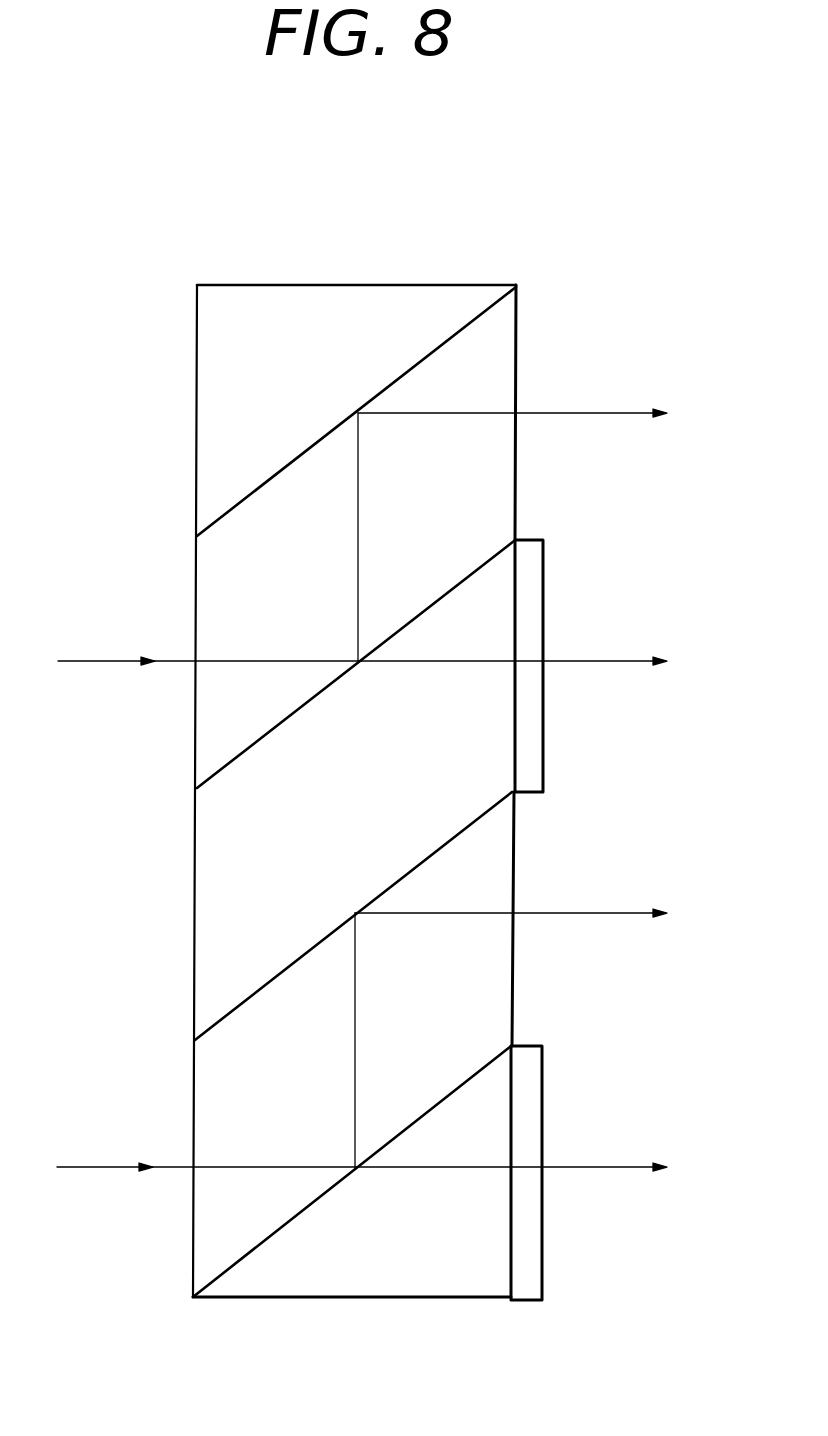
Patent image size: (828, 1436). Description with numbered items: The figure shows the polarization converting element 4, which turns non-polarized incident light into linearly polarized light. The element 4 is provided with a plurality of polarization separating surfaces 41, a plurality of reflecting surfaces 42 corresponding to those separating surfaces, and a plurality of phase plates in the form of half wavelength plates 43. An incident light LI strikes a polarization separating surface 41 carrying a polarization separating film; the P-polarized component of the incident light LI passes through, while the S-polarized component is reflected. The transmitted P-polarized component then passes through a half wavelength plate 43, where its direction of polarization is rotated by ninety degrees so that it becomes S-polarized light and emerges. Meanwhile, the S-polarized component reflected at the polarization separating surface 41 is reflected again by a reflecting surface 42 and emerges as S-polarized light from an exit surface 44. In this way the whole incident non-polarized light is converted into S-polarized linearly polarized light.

The polarization converting element 4 is at (427, 257).
The polarization separating surface 41 is at (230, 762).
The reflecting surface 42 is at (283, 468).
The half wavelength plate 43 is at (535, 755).
The exit surface 44 is at (517, 328).
The incident light LI is at (103, 659).